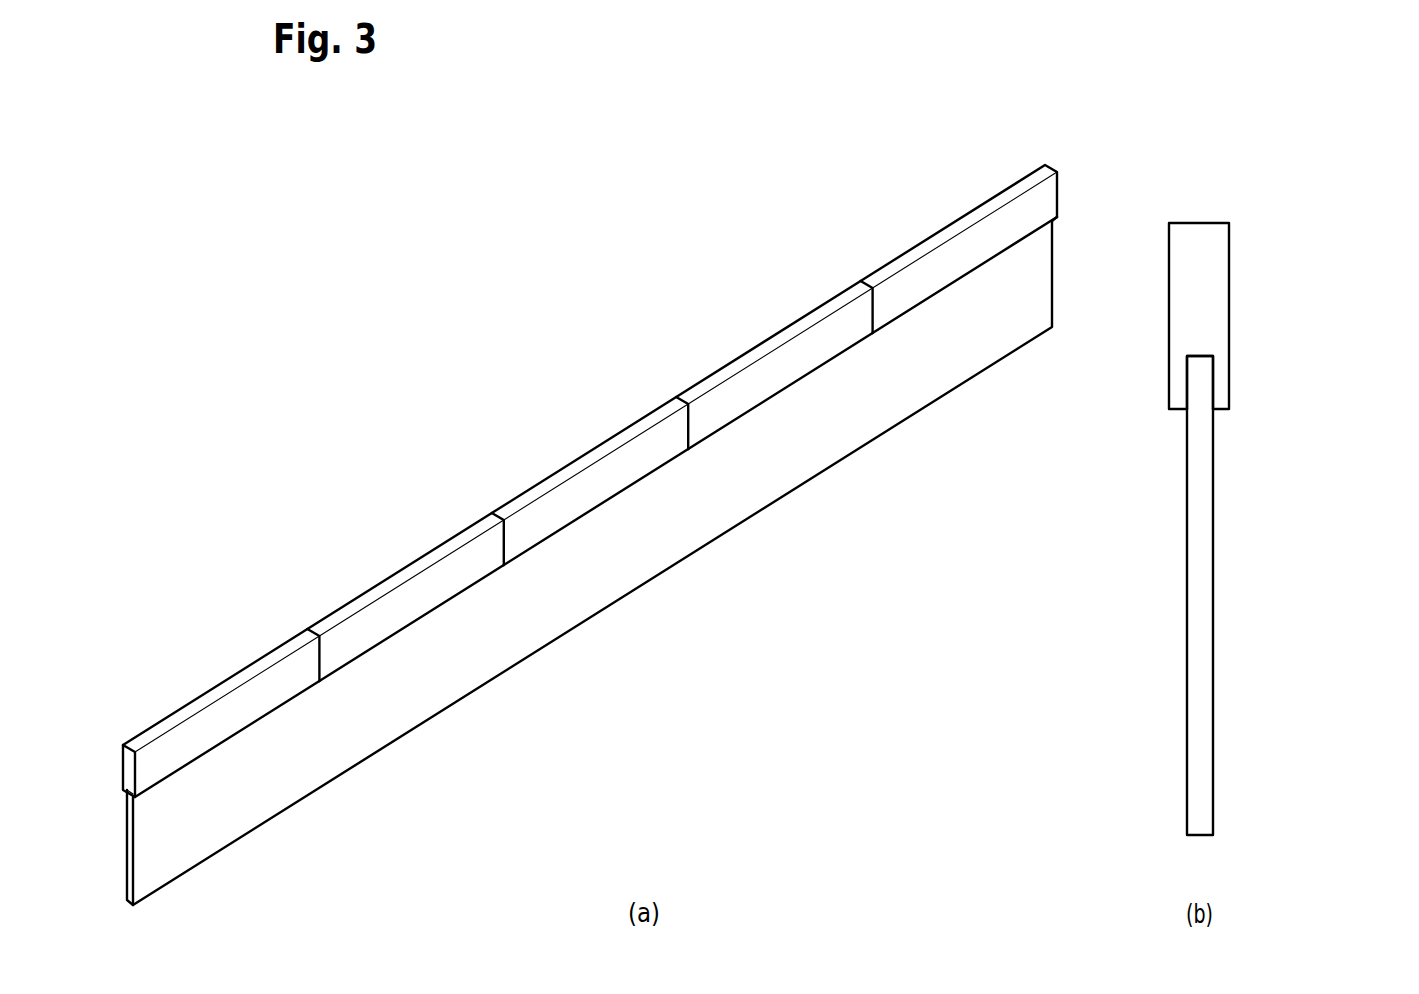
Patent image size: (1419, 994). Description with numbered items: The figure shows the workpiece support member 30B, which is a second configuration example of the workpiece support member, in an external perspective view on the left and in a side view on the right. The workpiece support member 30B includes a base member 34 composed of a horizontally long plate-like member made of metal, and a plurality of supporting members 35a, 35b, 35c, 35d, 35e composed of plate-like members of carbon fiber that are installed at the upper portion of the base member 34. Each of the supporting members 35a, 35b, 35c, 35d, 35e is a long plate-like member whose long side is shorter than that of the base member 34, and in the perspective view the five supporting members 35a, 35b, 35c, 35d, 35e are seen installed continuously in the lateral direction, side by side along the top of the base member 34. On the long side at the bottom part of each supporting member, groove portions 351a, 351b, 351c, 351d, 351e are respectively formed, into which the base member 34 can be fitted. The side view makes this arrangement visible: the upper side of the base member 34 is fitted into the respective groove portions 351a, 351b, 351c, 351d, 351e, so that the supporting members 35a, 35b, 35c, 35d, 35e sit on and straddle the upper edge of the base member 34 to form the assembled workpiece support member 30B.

The workpiece support member 30B is at (658, 208).
The base member 34 is at (772, 467).
The supporting member 35a is at (218, 686).
The supporting member 35b is at (400, 571).
The supporting member 35c is at (585, 454).
The supporting member 35d is at (768, 339).
The supporting member 35e is at (952, 223).
The groove portion 351a is at (1299, 382).
The groove portion 351b is at (1299, 382).
The groove portion 351c is at (1299, 382).
The groove portion 351d is at (1299, 382).
The groove portion 351e is at (1213, 383).